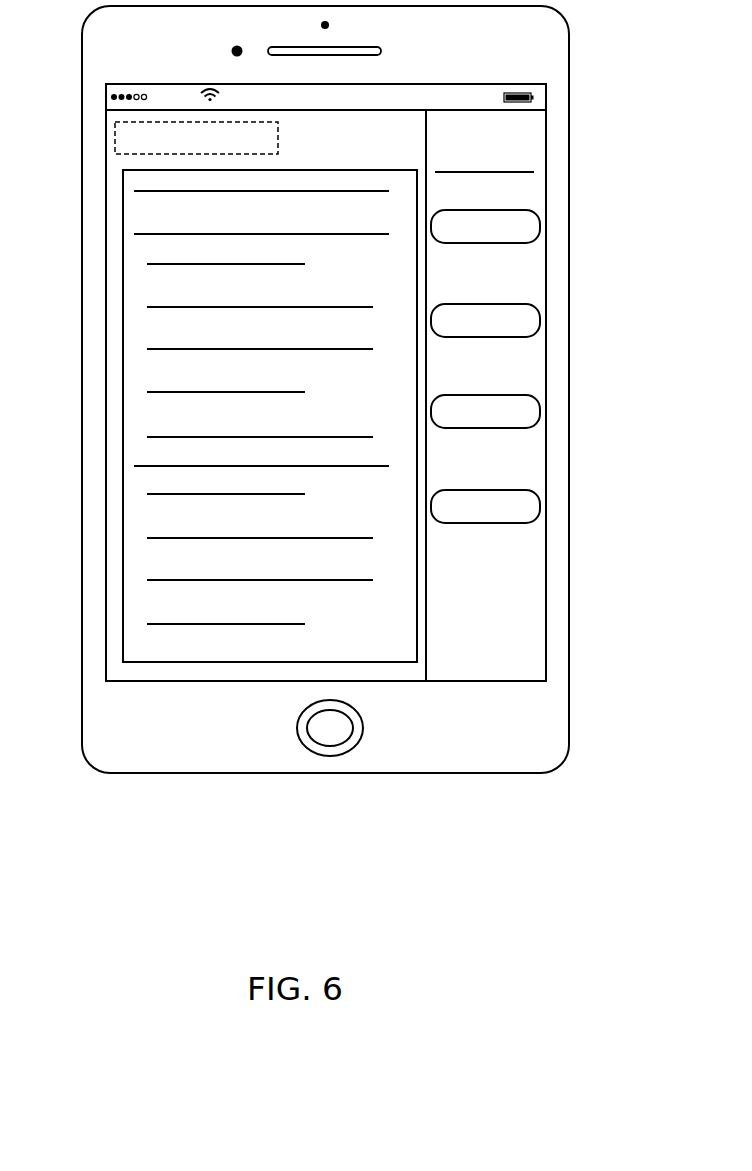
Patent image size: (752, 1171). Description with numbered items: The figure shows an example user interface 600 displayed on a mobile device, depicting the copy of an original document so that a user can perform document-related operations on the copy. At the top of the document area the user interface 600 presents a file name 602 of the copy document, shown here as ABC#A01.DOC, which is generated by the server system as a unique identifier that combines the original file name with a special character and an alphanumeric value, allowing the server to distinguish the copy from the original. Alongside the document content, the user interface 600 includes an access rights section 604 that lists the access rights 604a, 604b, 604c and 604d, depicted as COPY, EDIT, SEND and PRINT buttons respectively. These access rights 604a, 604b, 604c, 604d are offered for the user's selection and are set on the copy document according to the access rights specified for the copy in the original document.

The user interface 600 is at (579, 891).
The file name 602 is at (112, 135).
The access rights section 604 is at (534, 148).
The access right 604a is at (544, 230).
The access right 604b is at (544, 325).
The access right 604c is at (544, 413).
The access right 604d is at (544, 508).